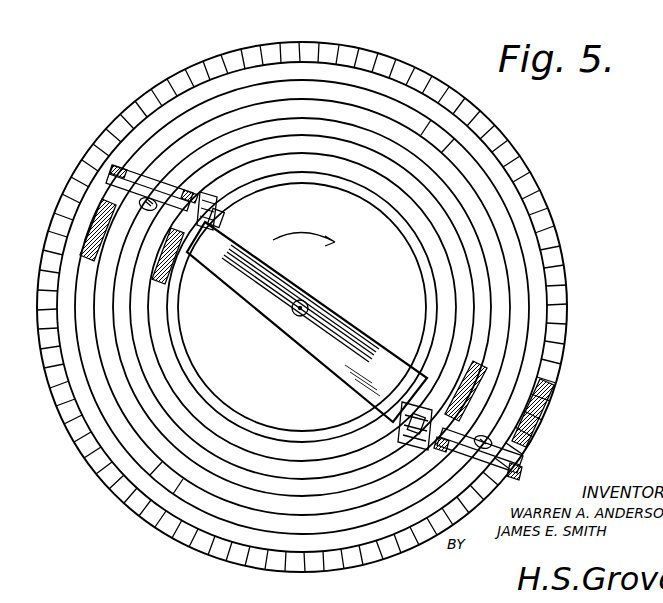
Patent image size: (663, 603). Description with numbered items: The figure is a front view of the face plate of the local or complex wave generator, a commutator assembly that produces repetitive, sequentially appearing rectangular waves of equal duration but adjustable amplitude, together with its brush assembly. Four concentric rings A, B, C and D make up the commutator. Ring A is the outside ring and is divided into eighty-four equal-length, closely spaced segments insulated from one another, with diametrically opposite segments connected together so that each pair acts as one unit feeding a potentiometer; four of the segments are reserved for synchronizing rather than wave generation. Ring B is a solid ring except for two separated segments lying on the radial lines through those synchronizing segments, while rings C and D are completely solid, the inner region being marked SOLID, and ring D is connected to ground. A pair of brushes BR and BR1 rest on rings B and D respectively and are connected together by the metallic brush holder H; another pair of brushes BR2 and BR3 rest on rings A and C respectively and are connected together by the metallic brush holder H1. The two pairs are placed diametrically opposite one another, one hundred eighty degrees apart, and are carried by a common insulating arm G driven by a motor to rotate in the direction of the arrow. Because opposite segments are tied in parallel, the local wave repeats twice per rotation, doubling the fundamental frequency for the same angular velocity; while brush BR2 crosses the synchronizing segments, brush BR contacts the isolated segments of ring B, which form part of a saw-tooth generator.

The ring A is at (302, 307).
The ring B is at (302, 307).
The ring C is at (302, 307).
The ring D is at (302, 307).
The solid inner ring SOLID is at (163, 372).
The insulating arm G is at (346, 323).
The metallic brush holder H is at (152, 187).
The metallic brush holder H1 is at (492, 438).
The brush BR is at (93, 250).
The brush BR1 is at (160, 283).
The brush BR2 is at (549, 415).
The brush BR3 is at (457, 388).